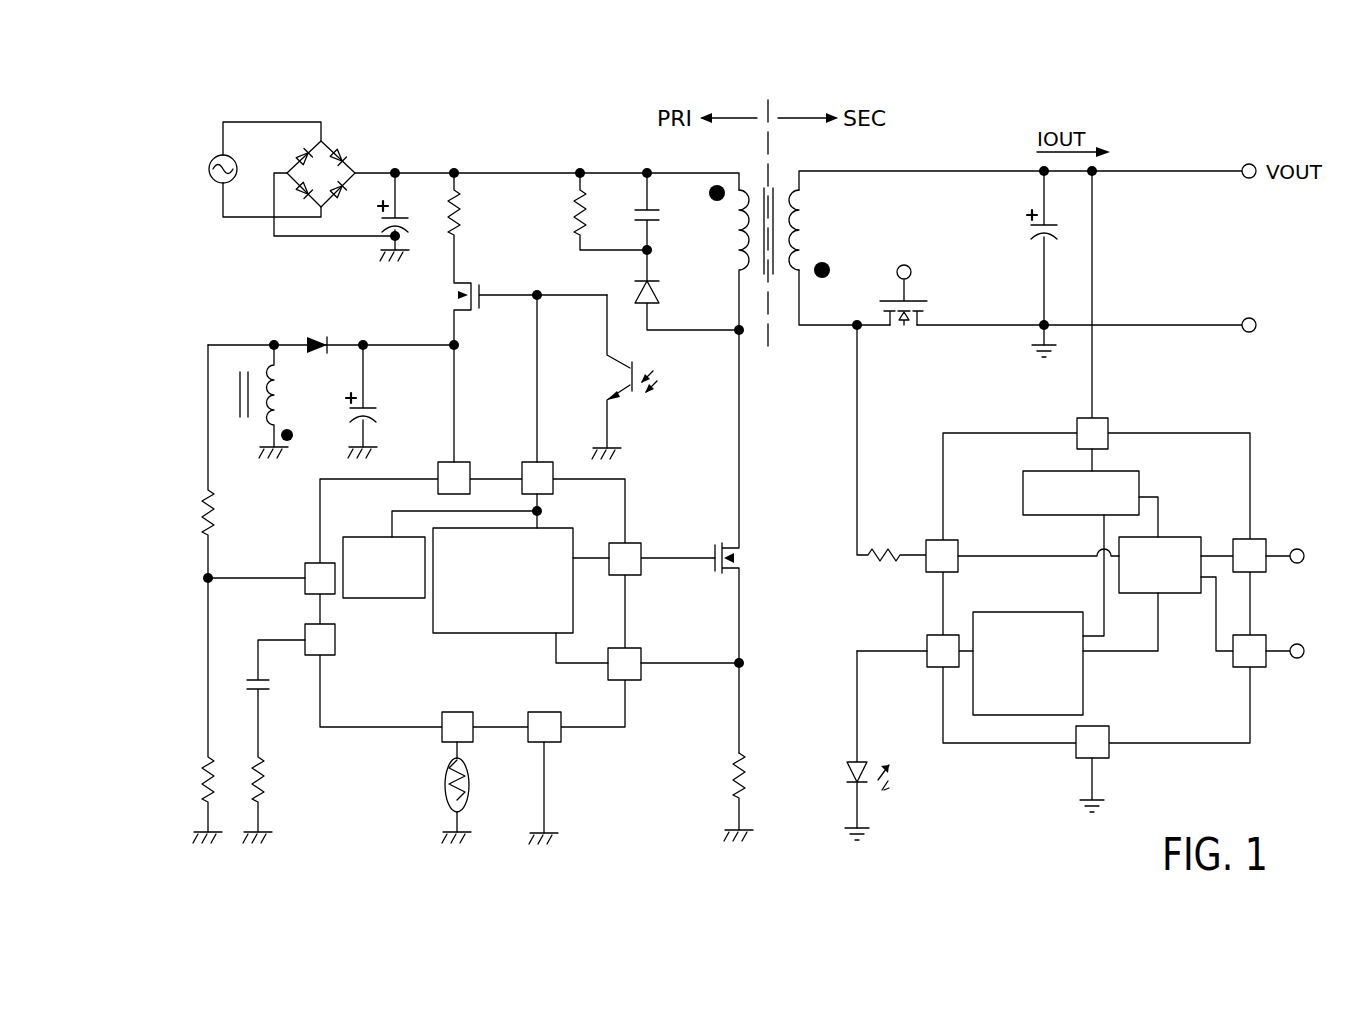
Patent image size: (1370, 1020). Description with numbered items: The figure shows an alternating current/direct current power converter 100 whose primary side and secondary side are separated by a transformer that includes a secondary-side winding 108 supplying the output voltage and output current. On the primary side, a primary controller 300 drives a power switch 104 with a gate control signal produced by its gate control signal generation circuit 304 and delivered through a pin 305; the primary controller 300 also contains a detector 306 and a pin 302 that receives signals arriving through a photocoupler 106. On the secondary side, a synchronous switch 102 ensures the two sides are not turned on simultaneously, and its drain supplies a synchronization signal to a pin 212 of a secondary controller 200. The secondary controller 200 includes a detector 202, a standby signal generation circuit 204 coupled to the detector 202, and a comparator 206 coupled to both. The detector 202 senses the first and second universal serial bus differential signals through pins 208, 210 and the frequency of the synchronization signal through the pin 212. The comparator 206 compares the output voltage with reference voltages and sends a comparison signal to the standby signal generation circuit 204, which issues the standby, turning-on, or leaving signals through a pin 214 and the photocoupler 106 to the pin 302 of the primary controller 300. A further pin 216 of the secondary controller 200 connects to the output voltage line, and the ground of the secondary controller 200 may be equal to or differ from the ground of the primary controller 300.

The power converter 100 is at (1212, 107).
The synchronous switch 102 is at (907, 332).
The power switch 104 is at (742, 554).
The photocoupler 106 is at (603, 376).
The winding 108 is at (804, 200).
The secondary controller 200 is at (1212, 433).
The detector 202 is at (1175, 537).
The standby signal generation circuit 204 is at (1018, 612).
The comparator 206 is at (1035, 471).
The pin 208 is at (1262, 538).
The pin 210 is at (1262, 634).
The pin 212 is at (930, 540).
The pin 214 is at (930, 668).
The output voltage sensing pin 216 is at (1104, 418).
The primary controller 300 is at (597, 728).
The pin 302 is at (524, 462).
The gate control signal generation circuit 304 is at (483, 634).
The pin 305 is at (642, 576).
The detector 306 is at (385, 600).